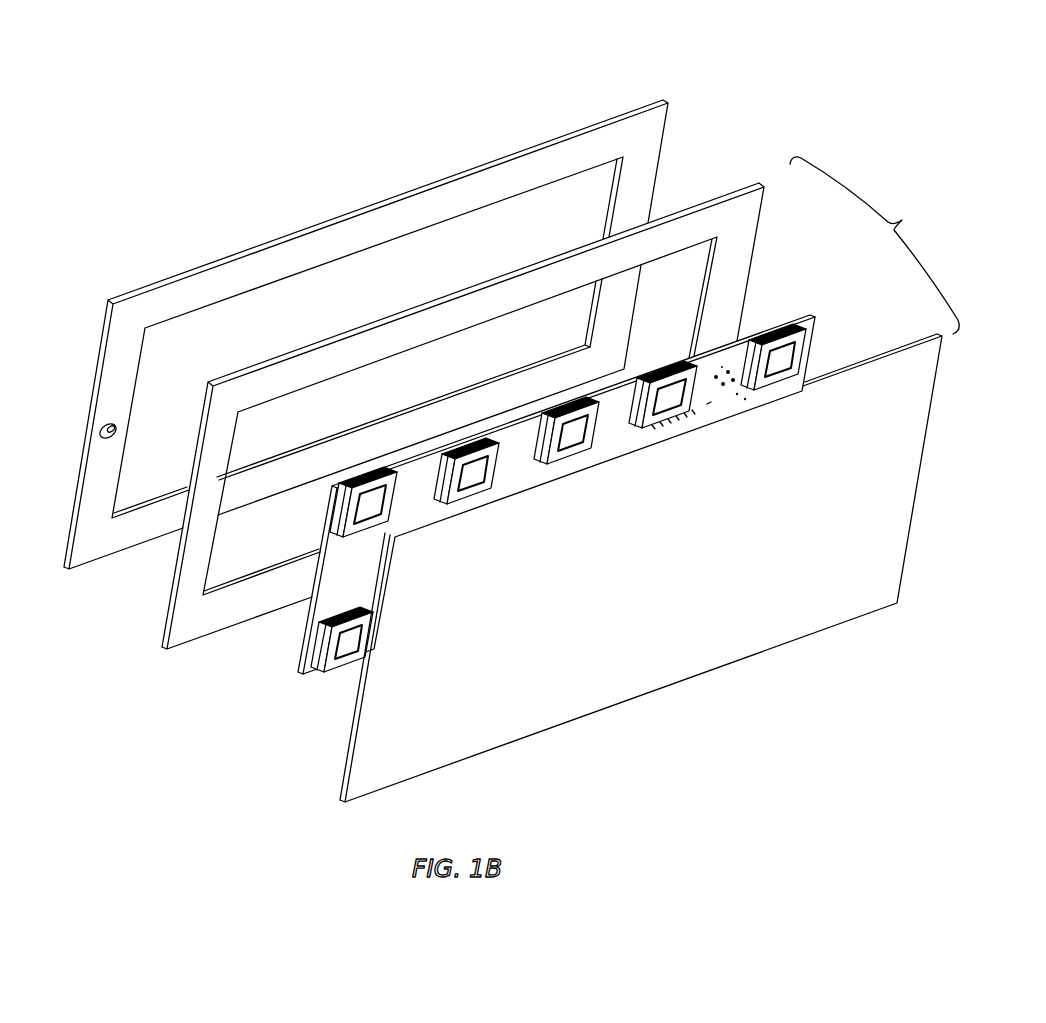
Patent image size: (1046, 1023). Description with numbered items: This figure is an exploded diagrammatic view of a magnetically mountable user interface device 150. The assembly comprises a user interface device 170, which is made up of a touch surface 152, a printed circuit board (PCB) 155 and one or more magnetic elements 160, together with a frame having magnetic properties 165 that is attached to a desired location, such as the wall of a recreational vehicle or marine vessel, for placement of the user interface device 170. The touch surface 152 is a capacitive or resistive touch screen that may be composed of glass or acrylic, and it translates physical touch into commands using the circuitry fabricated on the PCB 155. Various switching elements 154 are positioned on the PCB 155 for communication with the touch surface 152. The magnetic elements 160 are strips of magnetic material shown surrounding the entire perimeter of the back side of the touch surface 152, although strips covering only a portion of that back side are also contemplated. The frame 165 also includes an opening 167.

The magnetically mountable user interface device 150 is at (499, 415).
The touch surface 152 is at (868, 360).
The switching elements 154 is at (556, 498).
The printed circuit board 155 is at (766, 320).
The magnetic elements 160 is at (699, 203).
The frame having magnetic properties 165 is at (354, 334).
The opening 167 is at (100, 444).
The user interface device 170 is at (874, 245).